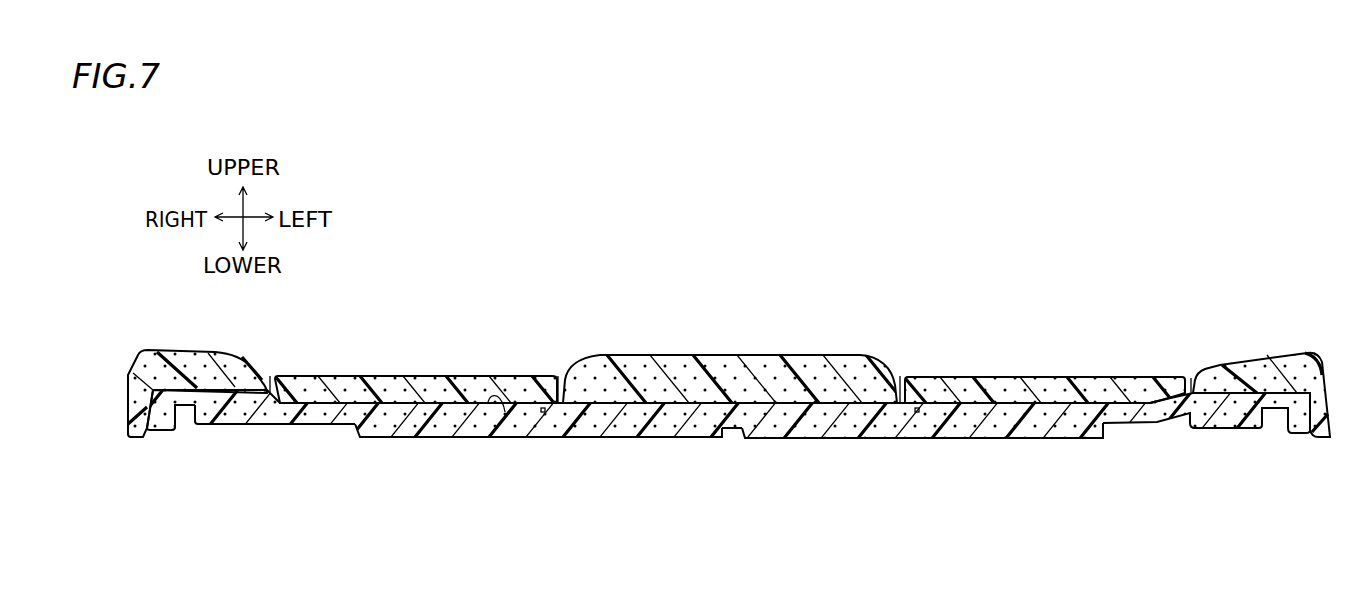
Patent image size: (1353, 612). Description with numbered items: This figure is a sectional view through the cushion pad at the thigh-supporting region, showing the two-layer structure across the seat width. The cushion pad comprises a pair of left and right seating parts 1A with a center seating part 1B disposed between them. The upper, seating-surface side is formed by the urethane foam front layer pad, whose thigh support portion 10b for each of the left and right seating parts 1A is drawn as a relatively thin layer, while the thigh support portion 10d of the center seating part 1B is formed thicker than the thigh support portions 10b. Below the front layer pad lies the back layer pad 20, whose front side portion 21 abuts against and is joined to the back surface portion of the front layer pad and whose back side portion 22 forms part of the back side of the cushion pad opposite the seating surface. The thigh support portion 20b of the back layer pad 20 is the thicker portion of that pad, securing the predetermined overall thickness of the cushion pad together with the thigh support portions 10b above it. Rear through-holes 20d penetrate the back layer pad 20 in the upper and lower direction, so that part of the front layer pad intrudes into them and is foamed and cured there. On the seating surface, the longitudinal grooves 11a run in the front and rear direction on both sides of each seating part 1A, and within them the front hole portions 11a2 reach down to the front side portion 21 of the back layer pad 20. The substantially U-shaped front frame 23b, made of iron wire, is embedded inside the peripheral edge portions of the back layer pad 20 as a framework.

The left and right seating parts 1A is at (1007, 377).
The center seating part 1B is at (678, 355).
The thigh support portion 10b is at (1050, 377).
The thigh support portion of the center seating part 10d is at (757, 355).
The longitudinal grooves 11a is at (729, 393).
The front hole portion 11a2 is at (1191, 378).
The back layer pad 20 is at (160, 444).
The thigh support portion 20b is at (1025, 440).
The rear through-holes 20d is at (697, 440).
The front side portion 21 is at (505, 412).
The back side portion 22 is at (464, 440).
The front frame 23b is at (1272, 412).